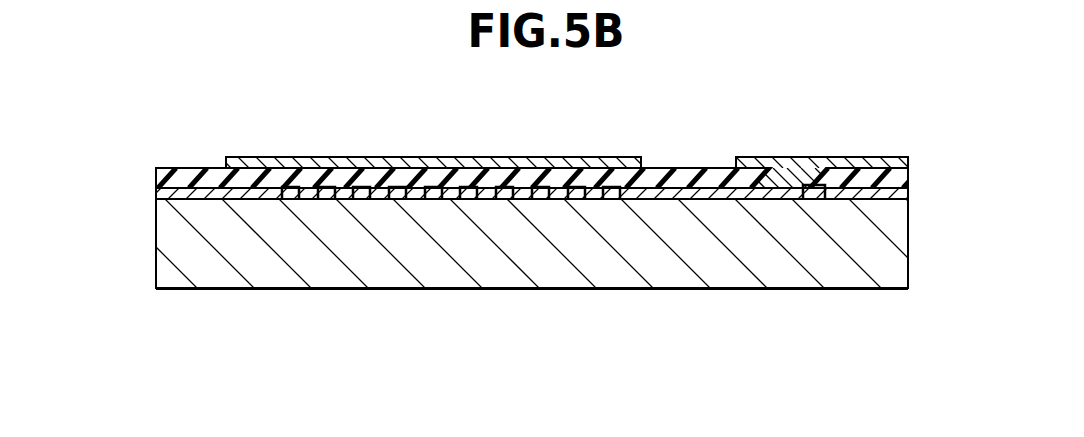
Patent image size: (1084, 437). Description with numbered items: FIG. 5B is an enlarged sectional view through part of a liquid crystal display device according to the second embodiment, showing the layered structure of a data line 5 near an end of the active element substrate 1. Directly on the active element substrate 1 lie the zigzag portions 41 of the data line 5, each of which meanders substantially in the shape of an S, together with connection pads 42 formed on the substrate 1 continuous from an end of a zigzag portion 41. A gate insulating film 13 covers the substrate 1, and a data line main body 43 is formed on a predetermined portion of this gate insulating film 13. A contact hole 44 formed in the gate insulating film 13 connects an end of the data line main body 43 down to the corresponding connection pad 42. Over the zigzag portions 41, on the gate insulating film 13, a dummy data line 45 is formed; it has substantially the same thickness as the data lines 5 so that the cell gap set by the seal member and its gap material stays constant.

The active element substrate 1 is at (233, 278).
The data line 5 is at (896, 150).
The gate insulating film 13 is at (692, 168).
The zigzag portions 41 is at (398, 193).
The connection pads 42 is at (795, 193).
The data line main bodies 43 is at (855, 162).
The contact holes 44 is at (793, 166).
The dummy data lines 45 is at (353, 158).